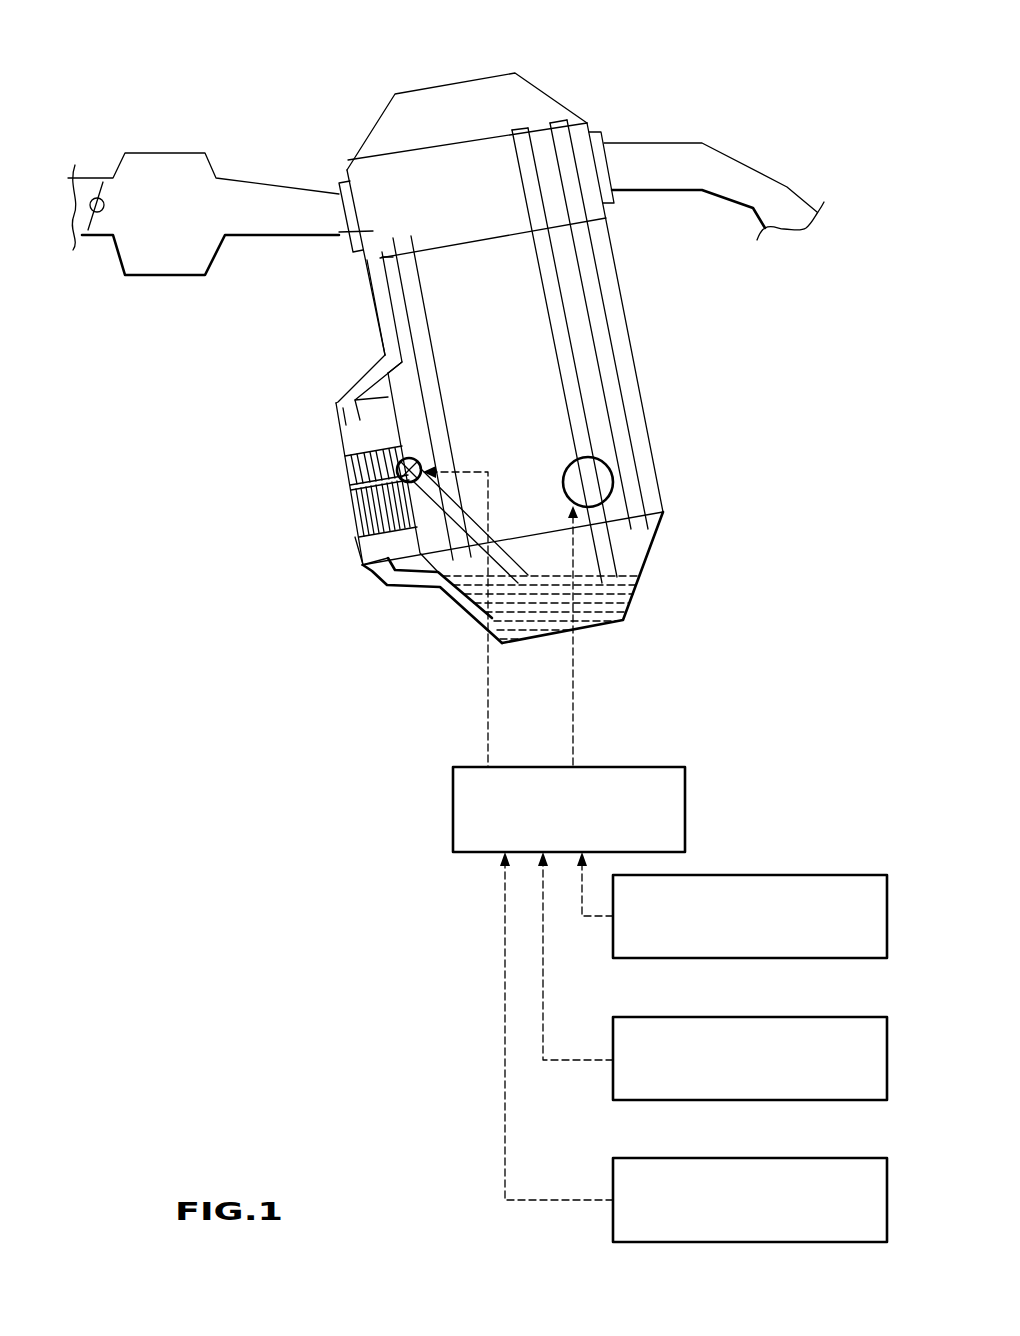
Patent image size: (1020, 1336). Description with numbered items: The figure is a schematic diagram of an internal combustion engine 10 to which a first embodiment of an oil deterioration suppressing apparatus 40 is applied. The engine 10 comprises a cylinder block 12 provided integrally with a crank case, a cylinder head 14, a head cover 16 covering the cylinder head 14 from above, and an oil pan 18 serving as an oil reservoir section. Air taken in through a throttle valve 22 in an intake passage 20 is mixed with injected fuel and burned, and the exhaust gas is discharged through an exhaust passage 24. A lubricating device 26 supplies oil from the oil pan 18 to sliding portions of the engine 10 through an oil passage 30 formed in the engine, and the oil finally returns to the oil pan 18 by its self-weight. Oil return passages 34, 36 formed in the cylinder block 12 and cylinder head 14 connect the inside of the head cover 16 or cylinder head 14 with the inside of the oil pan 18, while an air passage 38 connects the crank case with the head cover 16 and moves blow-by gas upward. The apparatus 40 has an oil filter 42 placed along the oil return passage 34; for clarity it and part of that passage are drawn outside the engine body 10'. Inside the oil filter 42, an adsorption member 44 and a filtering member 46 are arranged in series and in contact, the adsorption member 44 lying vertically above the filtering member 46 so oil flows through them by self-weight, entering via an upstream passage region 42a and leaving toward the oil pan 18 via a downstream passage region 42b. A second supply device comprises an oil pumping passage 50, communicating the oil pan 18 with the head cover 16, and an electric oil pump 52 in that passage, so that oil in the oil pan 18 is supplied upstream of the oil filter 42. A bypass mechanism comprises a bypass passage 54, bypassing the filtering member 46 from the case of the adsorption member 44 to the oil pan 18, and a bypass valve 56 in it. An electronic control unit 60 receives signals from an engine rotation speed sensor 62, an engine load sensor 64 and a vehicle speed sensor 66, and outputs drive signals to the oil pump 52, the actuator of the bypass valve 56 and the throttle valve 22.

The engine 10 is at (446, 386).
The engine body 10' is at (546, 513).
The cylinder block 12 is at (634, 362).
The cylinder head 14 is at (608, 207).
The head cover 16 is at (561, 104).
The oil pan 18 is at (647, 557).
The intake passage 20 is at (221, 198).
The throttle valve 22 is at (97, 198).
The exhaust passage 24 is at (757, 190).
The lubricating device 26 is at (309, 669).
The oil passage 30 is at (358, 252).
The oil return passage 34 is at (380, 325).
The oil return passage 36 is at (429, 333).
The air passage 38 is at (627, 424).
The oil deterioration suppressing apparatus 40 is at (249, 498).
The oil filter 42 is at (336, 501).
The upstream passage region 42a is at (343, 425).
The downstream passage region 42b is at (400, 568).
The adsorption member 44 is at (348, 462).
The filtering member 46 is at (365, 553).
The oil pumping passage 50 is at (562, 372).
The oil pump 52 is at (565, 465).
The bypass passage 54 is at (495, 532).
The bypass valve 56 is at (413, 458).
The electronic control unit 60 is at (649, 767).
The engine rotation speed sensor 62 is at (826, 876).
The engine load sensor 64 is at (826, 1016).
The vehicle speed sensor 66 is at (826, 1157).